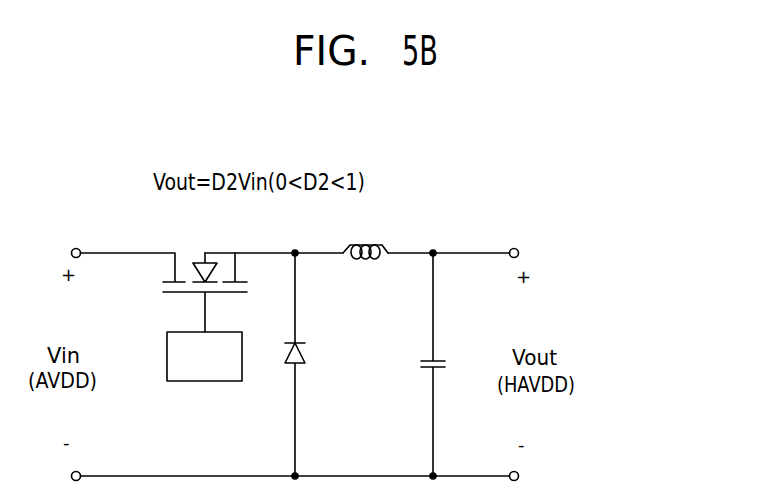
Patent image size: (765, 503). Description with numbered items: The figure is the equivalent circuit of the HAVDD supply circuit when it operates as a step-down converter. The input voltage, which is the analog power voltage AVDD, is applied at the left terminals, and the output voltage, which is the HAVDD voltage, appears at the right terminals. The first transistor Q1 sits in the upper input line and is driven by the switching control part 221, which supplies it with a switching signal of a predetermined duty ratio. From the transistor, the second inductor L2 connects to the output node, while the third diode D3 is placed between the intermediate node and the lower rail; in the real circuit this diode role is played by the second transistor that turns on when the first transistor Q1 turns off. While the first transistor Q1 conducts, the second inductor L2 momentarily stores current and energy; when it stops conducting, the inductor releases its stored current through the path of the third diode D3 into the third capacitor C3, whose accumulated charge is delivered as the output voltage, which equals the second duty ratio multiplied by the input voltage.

The switching control part 221 is at (182, 381).
The first transistor Q1 is at (205, 277).
The second inductor L2 is at (365, 271).
The third diode D3 is at (335, 364).
The third capacitor C3 is at (445, 364).